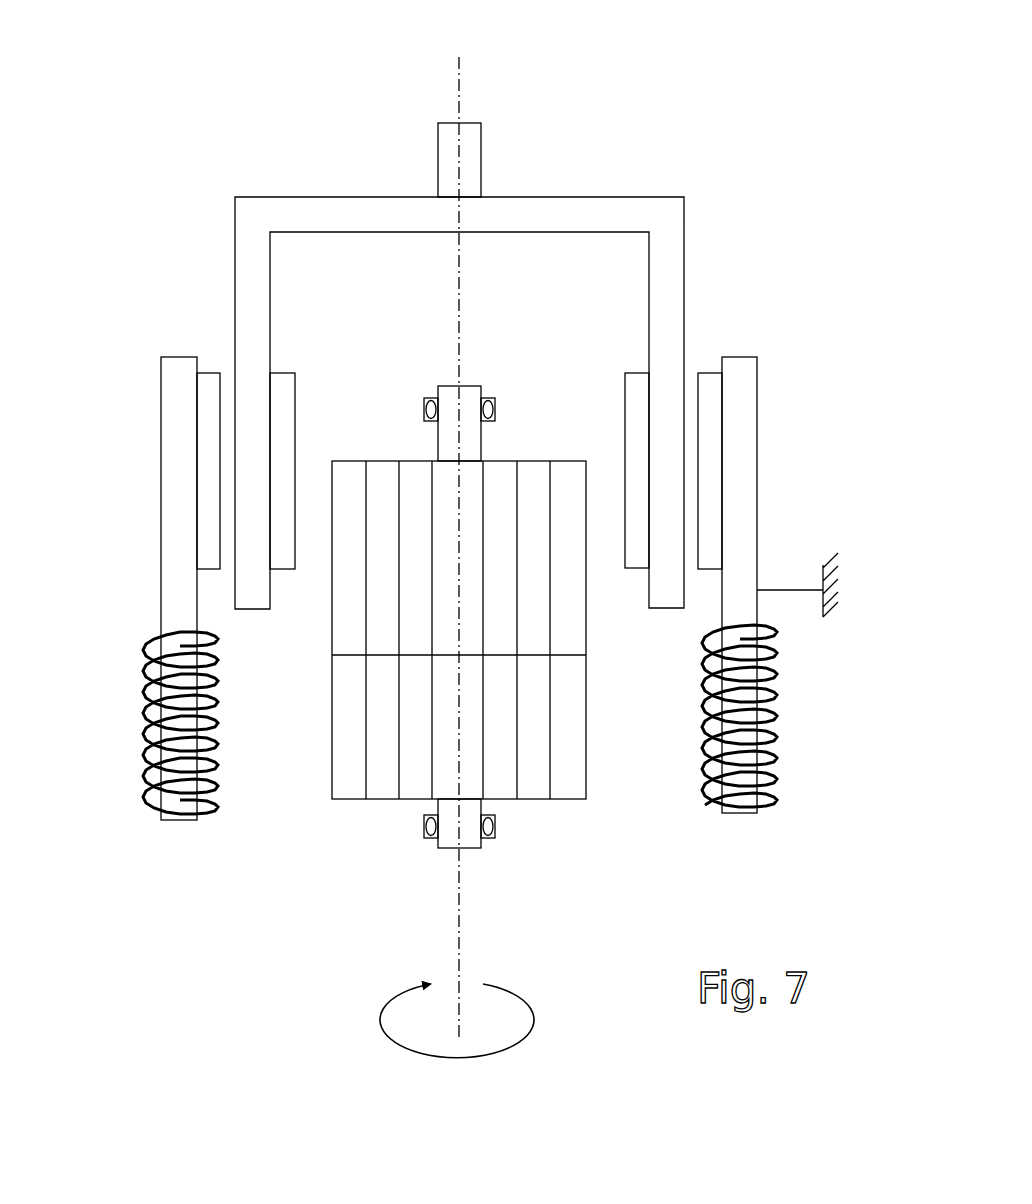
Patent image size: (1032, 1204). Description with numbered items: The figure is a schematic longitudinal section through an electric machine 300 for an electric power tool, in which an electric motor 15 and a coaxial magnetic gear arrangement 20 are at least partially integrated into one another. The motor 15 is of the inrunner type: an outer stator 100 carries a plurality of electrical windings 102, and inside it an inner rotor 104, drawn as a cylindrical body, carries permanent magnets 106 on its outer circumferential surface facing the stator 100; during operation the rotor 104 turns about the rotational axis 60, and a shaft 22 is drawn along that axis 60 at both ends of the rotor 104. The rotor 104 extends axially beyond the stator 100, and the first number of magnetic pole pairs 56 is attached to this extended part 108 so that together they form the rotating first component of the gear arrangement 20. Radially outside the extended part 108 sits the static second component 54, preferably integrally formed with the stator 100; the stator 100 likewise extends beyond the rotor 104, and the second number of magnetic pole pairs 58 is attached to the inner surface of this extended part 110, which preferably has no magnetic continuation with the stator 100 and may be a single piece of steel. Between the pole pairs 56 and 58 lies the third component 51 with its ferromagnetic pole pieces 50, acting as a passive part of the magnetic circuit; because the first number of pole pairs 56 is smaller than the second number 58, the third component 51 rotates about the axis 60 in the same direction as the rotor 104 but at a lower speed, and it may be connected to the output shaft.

The electric machine 300 is at (499, 307).
The rotational axis 60 is at (458, 93).
The third component 51 is at (577, 210).
The second number of magnetic pole pairs 58 is at (210, 380).
The first number of magnetic pole pairs 56 is at (457, 630).
The rotor shaft 22 is at (470, 398).
The coaxial magnetic gear arrangement 20 is at (473, 547).
The second component 54 is at (456, 588).
The extended part of the stator 110 is at (173, 504).
The extended part of the rotor 108 is at (350, 540).
The ferromagnetic pole pieces 50 is at (285, 555).
The outer stator 100 is at (460, 719).
The electrical windings 102 is at (145, 740).
The electric motor 15 is at (470, 710).
The permanent magnets 106 is at (378, 776).
The inner rotor 104 is at (532, 800).